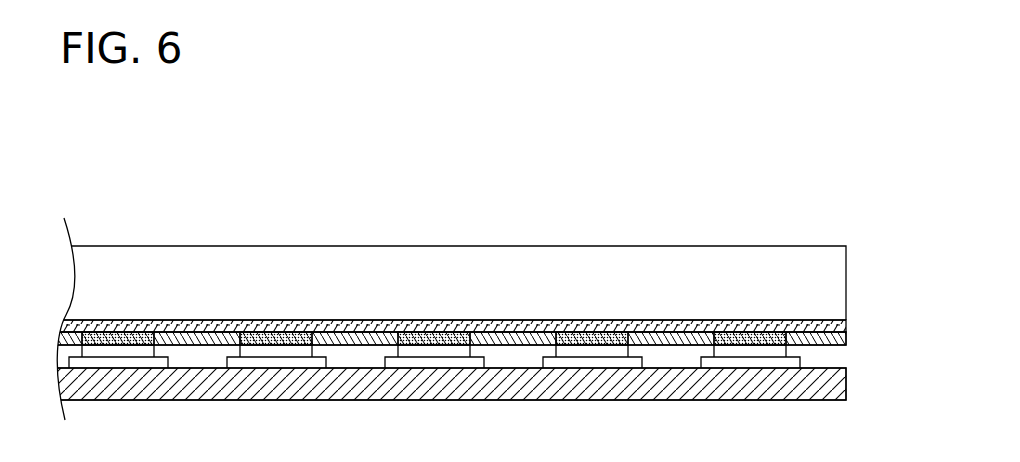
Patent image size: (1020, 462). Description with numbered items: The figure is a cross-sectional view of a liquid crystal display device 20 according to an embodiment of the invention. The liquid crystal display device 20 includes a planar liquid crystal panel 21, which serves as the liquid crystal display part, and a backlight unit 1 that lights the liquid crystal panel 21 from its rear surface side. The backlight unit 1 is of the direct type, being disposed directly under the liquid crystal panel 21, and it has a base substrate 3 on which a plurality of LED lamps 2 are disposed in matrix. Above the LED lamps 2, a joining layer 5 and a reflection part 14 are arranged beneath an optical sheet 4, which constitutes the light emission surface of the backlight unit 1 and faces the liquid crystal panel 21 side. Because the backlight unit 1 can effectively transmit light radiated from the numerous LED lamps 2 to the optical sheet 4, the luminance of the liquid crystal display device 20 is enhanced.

The liquid crystal display device 20 is at (669, 211).
The liquid crystal panel 21 is at (846, 287).
The backlight unit 1 is at (858, 322).
The light emitting device (LED lamp) 2 is at (762, 352).
The base substrate 3 is at (813, 385).
The optical sheet 4 is at (652, 327).
The joining layer 5 is at (727, 342).
The reflection part 14 is at (517, 335).